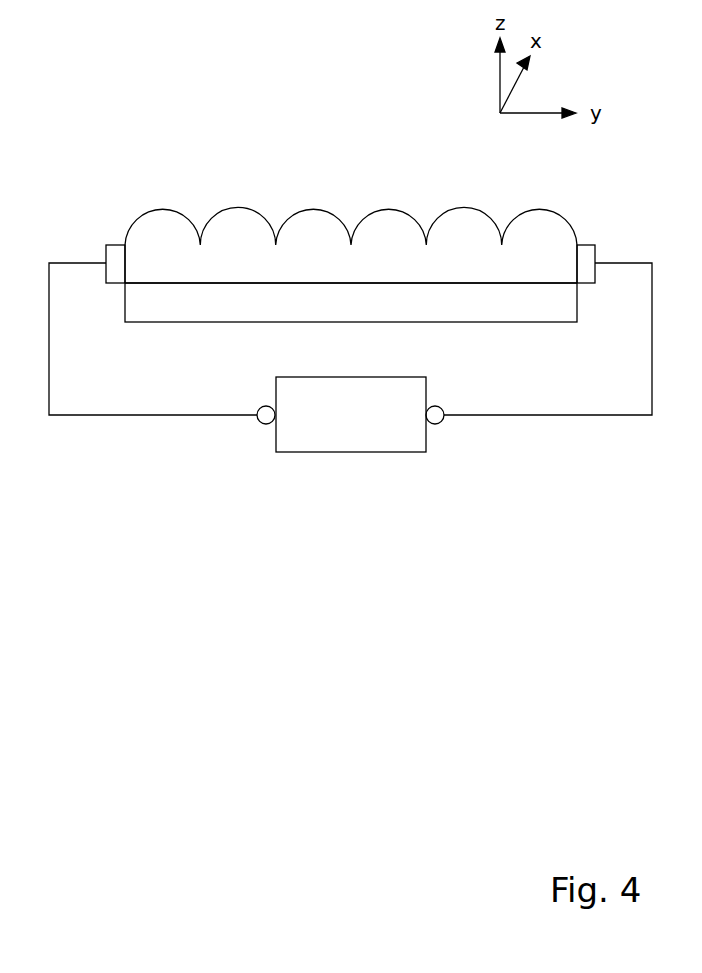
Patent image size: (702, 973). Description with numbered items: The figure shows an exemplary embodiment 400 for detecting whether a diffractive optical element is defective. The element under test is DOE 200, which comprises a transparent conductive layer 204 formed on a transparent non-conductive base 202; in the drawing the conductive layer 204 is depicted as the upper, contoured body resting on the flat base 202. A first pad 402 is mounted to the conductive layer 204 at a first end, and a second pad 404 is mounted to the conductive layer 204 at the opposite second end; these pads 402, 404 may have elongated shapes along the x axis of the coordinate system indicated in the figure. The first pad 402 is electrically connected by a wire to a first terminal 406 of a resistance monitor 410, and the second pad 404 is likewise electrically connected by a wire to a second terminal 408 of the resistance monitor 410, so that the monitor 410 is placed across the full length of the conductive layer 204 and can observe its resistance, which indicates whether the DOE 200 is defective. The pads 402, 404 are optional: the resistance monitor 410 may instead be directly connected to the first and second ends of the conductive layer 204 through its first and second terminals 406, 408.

The embodiment for detecting whether the DOE is defective 400 is at (95, 80).
The DOE 200 is at (462, 198).
The transparent non-conductive base 202 is at (180, 323).
The transparent conductive layer 204 is at (147, 207).
The first pad 402 is at (597, 257).
The second pad 404 is at (105, 257).
The first terminal 406 is at (438, 424).
The second terminal 408 is at (263, 425).
The resistance monitor 410 is at (426, 380).